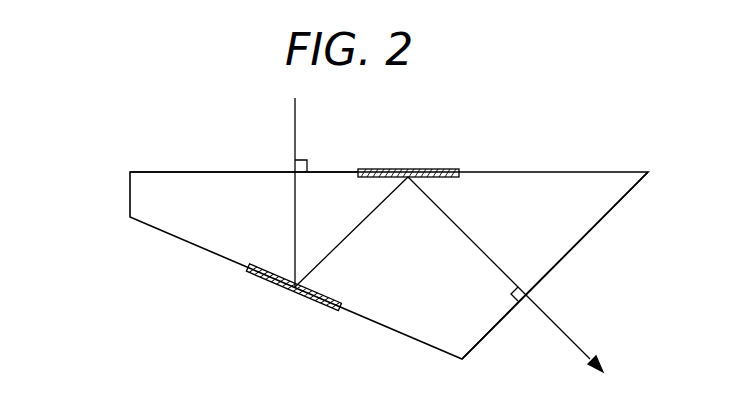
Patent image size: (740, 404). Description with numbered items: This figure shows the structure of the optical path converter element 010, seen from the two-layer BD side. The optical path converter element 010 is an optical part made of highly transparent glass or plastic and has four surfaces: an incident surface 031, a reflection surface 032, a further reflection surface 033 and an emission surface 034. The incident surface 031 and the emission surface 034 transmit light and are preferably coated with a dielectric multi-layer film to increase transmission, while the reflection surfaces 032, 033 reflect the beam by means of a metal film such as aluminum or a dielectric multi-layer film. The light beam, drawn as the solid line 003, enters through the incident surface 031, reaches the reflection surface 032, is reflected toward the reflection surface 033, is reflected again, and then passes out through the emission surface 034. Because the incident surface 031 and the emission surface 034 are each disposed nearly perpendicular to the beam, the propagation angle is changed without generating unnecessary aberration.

The optical path converter element 010 is at (136, 195).
The light beam 003 is at (296, 113).
The incident surface 031 is at (267, 171).
The reflection surface 032 is at (308, 297).
The reflection surface 033 is at (440, 169).
The emission surface 034 is at (562, 259).